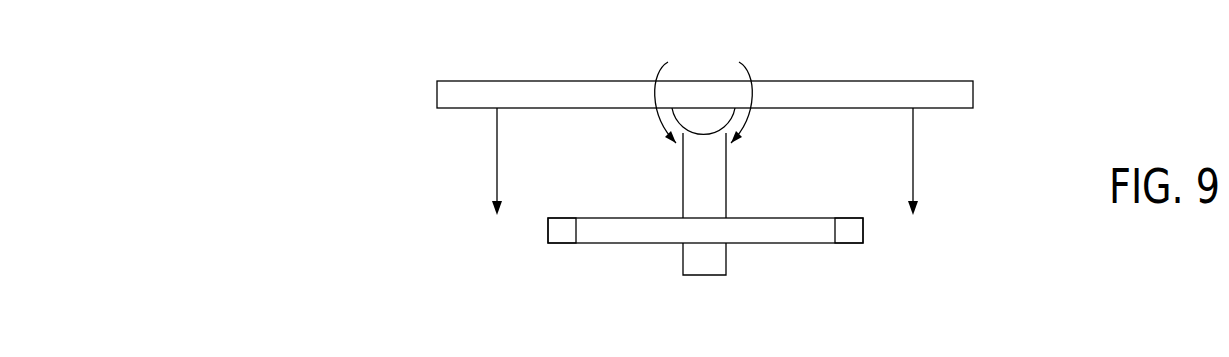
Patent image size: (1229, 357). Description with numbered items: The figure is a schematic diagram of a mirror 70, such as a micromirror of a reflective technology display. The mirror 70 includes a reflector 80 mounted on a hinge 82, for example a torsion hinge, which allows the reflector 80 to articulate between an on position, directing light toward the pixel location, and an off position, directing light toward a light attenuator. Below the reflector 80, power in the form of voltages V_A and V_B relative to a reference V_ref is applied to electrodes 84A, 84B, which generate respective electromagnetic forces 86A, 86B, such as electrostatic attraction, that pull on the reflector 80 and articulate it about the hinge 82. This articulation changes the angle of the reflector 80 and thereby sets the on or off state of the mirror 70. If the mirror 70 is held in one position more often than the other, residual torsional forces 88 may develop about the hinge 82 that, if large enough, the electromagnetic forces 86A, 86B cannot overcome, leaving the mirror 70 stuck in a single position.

The mirror 70 is at (317, 65).
The reflector 80 is at (447, 80).
The hinge 82 is at (700, 142).
The electrode 84A is at (547, 231).
The electrode 84B is at (864, 231).
The electromagnetic force 86A is at (497, 153).
The electromagnetic force 86B is at (914, 153).
The residual torsional forces 88 is at (656, 80).